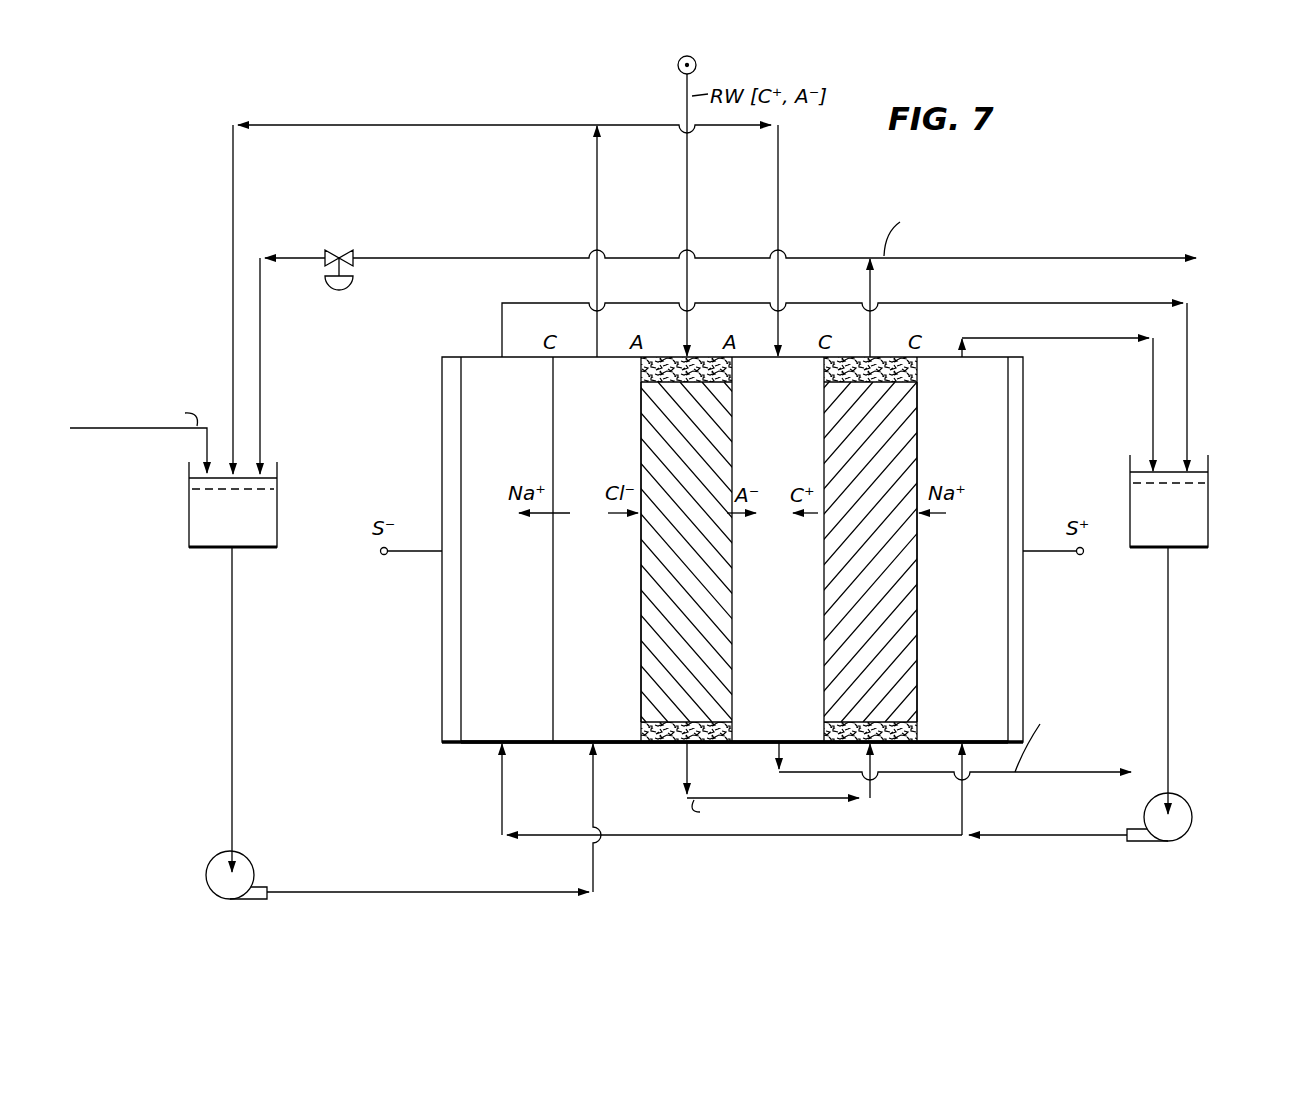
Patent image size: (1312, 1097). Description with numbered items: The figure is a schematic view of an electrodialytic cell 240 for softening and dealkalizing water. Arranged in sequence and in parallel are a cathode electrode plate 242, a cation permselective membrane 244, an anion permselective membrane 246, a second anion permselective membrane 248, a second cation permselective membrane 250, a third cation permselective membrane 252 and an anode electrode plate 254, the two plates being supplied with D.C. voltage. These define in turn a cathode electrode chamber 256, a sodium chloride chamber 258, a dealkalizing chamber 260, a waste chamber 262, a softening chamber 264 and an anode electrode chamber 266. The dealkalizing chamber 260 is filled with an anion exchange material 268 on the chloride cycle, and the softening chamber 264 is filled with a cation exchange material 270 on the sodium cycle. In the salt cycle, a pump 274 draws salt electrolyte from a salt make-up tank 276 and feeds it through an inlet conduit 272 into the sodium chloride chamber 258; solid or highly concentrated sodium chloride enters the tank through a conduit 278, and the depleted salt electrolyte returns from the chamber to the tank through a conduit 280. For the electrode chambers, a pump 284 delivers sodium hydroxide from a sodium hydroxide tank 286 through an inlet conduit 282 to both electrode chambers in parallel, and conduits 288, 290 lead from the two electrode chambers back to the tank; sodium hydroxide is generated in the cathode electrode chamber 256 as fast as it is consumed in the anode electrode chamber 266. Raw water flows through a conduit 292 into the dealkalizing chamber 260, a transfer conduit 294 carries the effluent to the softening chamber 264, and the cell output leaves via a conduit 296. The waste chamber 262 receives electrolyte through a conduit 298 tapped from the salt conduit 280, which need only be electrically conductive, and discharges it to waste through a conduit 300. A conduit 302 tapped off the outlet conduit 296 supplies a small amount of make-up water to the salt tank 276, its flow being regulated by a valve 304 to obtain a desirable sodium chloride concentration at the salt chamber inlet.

The cell 240 is at (999, 182).
The cathode electrode plate 242 is at (442, 658).
The cation permselective membrane 244 is at (553, 663).
The anion permselective membrane 246 is at (641, 650).
The second anion permselective membrane 248 is at (736, 634).
The second cation permselective membrane 250 is at (824, 665).
The third cation permselective membrane 252 is at (920, 642).
The anode electrode plate 254 is at (1025, 636).
The cathode electrode chamber 256 is at (478, 732).
The sodium chloride chamber 258 is at (573, 732).
The dealkalizing chamber 260 is at (653, 736).
The waste chamber 262 is at (754, 732).
The softening chamber 264 is at (856, 732).
The anode electrode chamber 266 is at (943, 732).
The anion exchange material 268 is at (657, 442).
The cation exchange material 270 is at (890, 449).
The inlet conduit 272 is at (422, 895).
The pump 274 is at (244, 859).
The salt make-up tank 276 is at (266, 543).
The conduit 278 is at (148, 433).
The conduit 280 is at (368, 124).
The inlet conduit 282 is at (1060, 842).
The pump 284 is at (1192, 822).
The sodium hydroxide tank 286 is at (1206, 550).
The conduit 288 is at (558, 300).
The conduit 290 is at (1078, 338).
The conduit 292 is at (597, 188).
The transfer conduit 294 is at (848, 810).
The conduit 296 is at (878, 283).
The conduit 298 is at (800, 178).
The conduit 300 is at (1032, 780).
The conduit 302 is at (458, 250).
The valve 304 is at (340, 290).